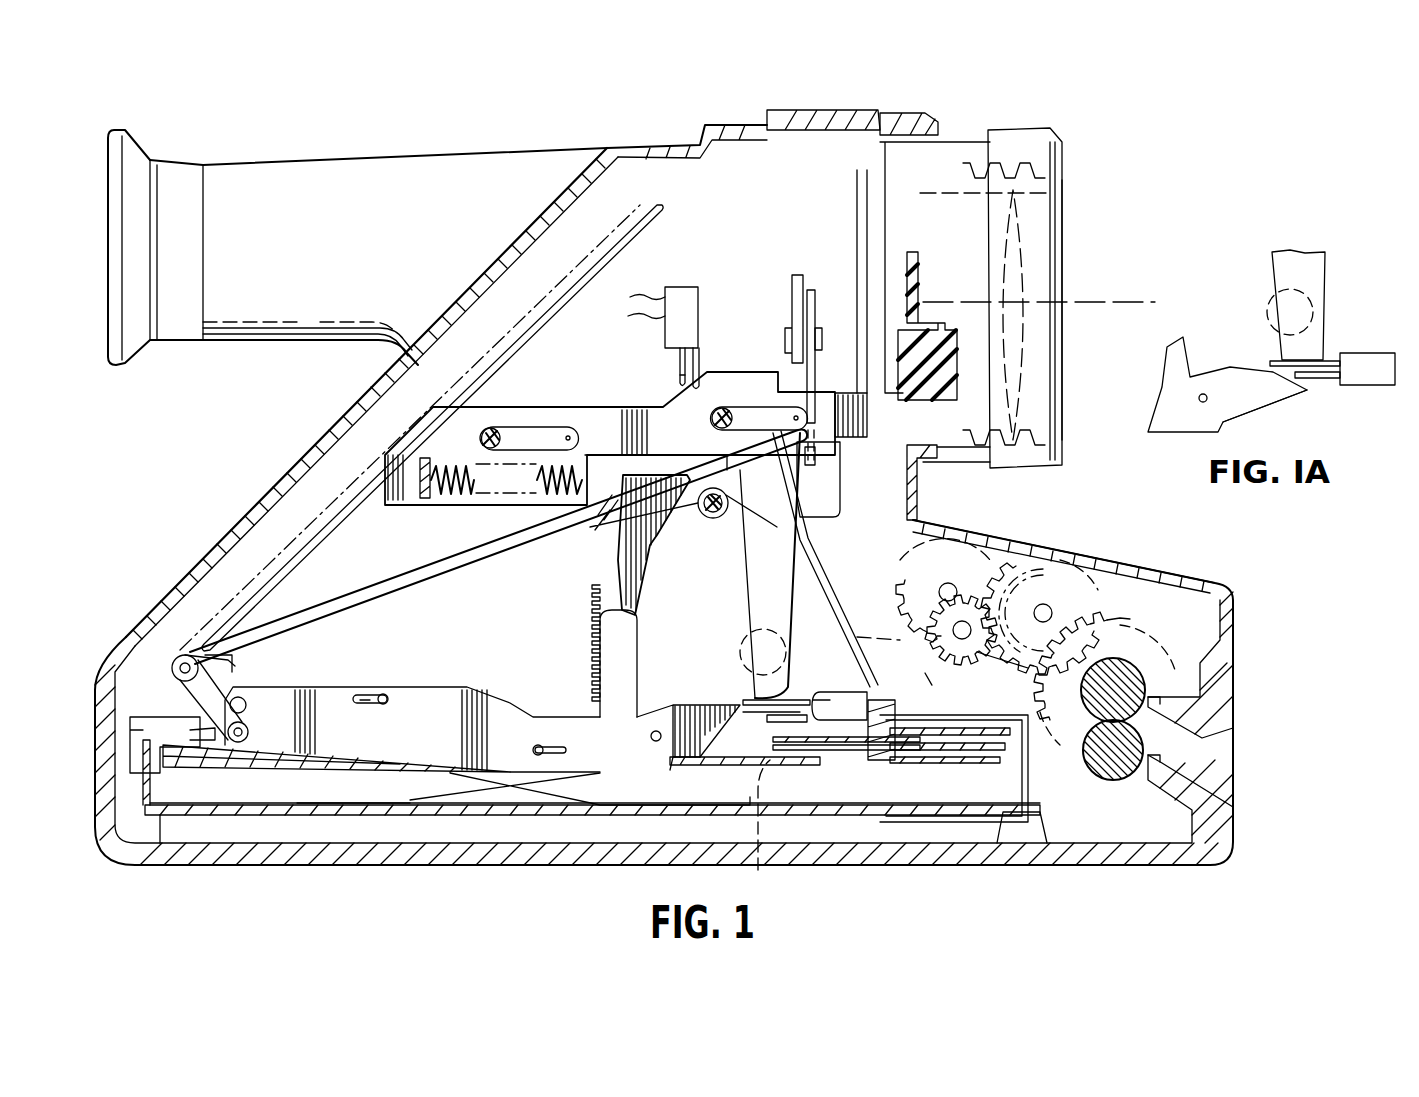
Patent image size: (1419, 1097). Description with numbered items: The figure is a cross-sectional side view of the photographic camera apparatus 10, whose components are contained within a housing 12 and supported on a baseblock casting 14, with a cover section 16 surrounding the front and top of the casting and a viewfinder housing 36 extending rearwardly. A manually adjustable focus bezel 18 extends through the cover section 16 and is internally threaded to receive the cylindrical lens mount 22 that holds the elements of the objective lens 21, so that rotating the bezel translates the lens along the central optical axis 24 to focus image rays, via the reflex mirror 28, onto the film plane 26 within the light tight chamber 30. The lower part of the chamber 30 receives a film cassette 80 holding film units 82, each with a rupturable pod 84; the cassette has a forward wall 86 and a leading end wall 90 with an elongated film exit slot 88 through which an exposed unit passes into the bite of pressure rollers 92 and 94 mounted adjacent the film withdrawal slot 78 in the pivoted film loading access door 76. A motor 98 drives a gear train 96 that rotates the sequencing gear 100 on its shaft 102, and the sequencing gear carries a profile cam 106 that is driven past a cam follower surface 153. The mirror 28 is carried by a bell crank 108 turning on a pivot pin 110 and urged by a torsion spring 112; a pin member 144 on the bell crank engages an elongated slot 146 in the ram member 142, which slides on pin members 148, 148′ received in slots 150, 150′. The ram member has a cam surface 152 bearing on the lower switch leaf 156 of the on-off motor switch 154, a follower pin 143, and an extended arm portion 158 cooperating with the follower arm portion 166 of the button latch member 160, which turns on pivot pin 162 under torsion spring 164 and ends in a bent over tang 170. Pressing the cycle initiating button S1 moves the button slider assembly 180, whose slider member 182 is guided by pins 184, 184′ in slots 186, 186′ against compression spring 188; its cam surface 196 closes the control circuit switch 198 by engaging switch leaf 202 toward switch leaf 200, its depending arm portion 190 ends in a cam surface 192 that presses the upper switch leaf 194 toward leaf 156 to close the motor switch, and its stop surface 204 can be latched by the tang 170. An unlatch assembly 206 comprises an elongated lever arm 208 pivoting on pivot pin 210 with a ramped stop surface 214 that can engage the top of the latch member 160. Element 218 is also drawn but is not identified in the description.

In FIG. 1, the photographic camera apparatus 10 is at (470, 132).
In FIG. 1, the housing 12 is at (316, 428).
In FIG. 1, the viewfinder housing 36 is at (290, 164).
In FIG. 1, the cover section 16 is at (915, 118).
In FIG. 1, the focus bezel 18 is at (1035, 130).
In FIG. 1, the cylindrical lens mount 22 is at (1028, 190).
In FIG. 1, the objective lens 21 is at (1068, 258).
In FIG. 1, the central optical axis 24 is at (1115, 300).
In FIG. 1, the photographic cycle initiating button S1 is at (955, 360).
In FIG. 1, the baseblock casting 14 is at (792, 298).
In FIG. 1, the unlatch assembly 206 is at (812, 291).
In FIG. 1, the pivot pin 210 is at (820, 328).
In FIG. 1, the stop surface 204 is at (842, 392).
In FIG. 1, the control circuit switch 198 is at (687, 286).
In FIG. 1, the resilient switch leaf 202 is at (700, 350).
In FIG. 1, the resilient switch leaf 200 is at (678, 368).
In FIG. 1, the cam surface 196 is at (672, 386).
In FIG. 1, the button slider assembly 180 is at (612, 405).
In FIG. 1, the slider member 182 is at (546, 404).
In FIG. 1, the pin 184 is at (495, 428).
In FIG. 1, the elongated slot 186 is at (560, 430).
In FIG. 1, the pin 184′ is at (722, 405).
In FIG. 1, the elongated slot 186′ is at (745, 404).
In FIG. 1, the elongated lever arm 208 is at (773, 417).
In FIG. 1, the compression spring 188 is at (455, 504).
In FIG. 1, the button latch member 160 is at (680, 510).
In FIG. 1, the torsion spring 164 is at (615, 538).
In FIG. 1, the pivot pin 162 is at (746, 540).
In FIG. 1, the bent over tang 170 is at (843, 452).
In FIG. 1, the ramped stop surface 214 is at (812, 466).
In FIG. 1, the integral arm portion 190 is at (812, 518).
In FIG. 1A, the integral arm portion 190 is at (1325, 265).
In FIG. 1, the cam surface 192 is at (822, 692).
In FIG. 1, the on-off motor switch 154 is at (865, 598).
In FIG. 1A, the on-off motor switch 154 is at (1368, 352).
In FIG. 1, the forward wall 86 is at (972, 650).
In FIG. 1, the electric motor 98 is at (1045, 575).
In FIG. 1, the gear train 96 is at (1113, 545).
In FIG. 1, the pressure applying roller 92 is at (1122, 665).
In FIG. 1, the pressure applying roller 94 is at (1118, 781).
In FIG. 1, the film exit slot 88 is at (1040, 738).
In FIG. 1, the film loading access door 76 is at (1235, 680).
In FIG. 1, the film withdrawal slot 78 is at (1230, 760).
In FIG. 1, the leading end wall 90 is at (1030, 790).
In FIG. 1, the rupturable pod 84 is at (960, 760).
In FIG. 1, the film units 82 is at (872, 762).
In FIG. 1, the film cassette 80 is at (665, 818).
In FIG. 1, the profile cam 106 is at (755, 825).
In FIG. 1, the lower resilient switch leaf 156 is at (800, 755).
In FIG. 1A, the lower resilient switch leaf 156 is at (1322, 380).
In FIG. 1, the cam surface 152 is at (790, 765).
In FIG. 1, the cam follower surface 153 is at (705, 765).
In FIG. 1, the upper switch leaf 194 is at (818, 724).
In FIG. 1A, the upper switch leaf 194 is at (1320, 360).
In FIG. 1, the follower pin 143 is at (652, 740).
In FIG. 1A, the follower pin 143 is at (1200, 403).
In FIG. 1, the extended arm portion 158 is at (638, 690).
In FIG. 1A, the extended arm portion 158 is at (1268, 402).
In FIG. 1, the sequencing gear 100 is at (592, 652).
In FIG. 1, the follower arm portion 166 is at (594, 612).
In FIG. 1, the shaft 102 is at (743, 647).
In FIG. 1A, the shaft 102 is at (1267, 310).
In FIG. 1, the ram member 142 is at (433, 687).
In FIG. 1A, the ram member 142 is at (1215, 373).
In FIG. 1, the pin member 148 is at (383, 694).
In FIG. 1, the elongated slot 150 is at (365, 706).
In FIG. 1, the pin member 148′ is at (565, 745).
In FIG. 1, the elongated slot 150′ is at (570, 778).
In FIG. 1, the elongated slot 146 is at (245, 700).
In FIG. 1, the film plane 26 is at (248, 726).
In FIG. 1, the pivot pin 110 is at (172, 668).
In FIG. 1, the torsion spring 112 is at (190, 705).
In FIG. 1, the bell crank 108 is at (208, 652).
In FIG. 1, the stop member 218 is at (185, 728).
In FIG. 1, the pin member 144 is at (245, 765).
In FIG. 1, the reflex mirror 28 is at (290, 574).
In FIG. 1, the light tight chamber 30 is at (476, 602).